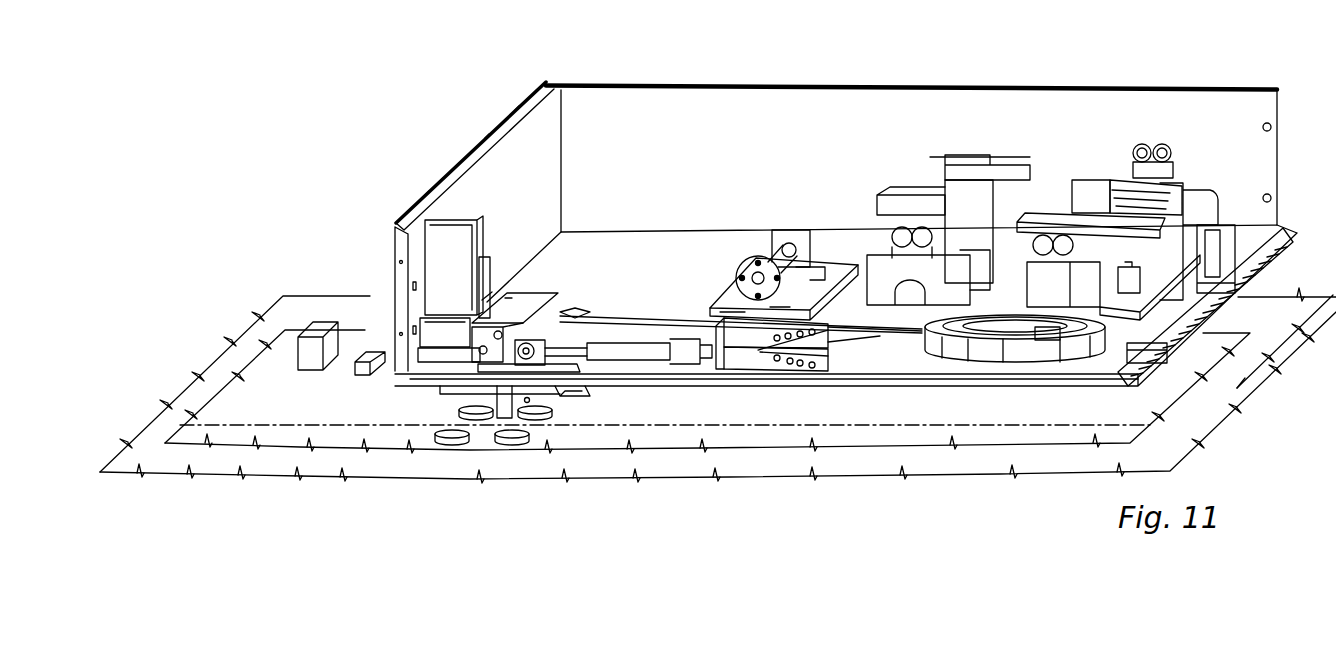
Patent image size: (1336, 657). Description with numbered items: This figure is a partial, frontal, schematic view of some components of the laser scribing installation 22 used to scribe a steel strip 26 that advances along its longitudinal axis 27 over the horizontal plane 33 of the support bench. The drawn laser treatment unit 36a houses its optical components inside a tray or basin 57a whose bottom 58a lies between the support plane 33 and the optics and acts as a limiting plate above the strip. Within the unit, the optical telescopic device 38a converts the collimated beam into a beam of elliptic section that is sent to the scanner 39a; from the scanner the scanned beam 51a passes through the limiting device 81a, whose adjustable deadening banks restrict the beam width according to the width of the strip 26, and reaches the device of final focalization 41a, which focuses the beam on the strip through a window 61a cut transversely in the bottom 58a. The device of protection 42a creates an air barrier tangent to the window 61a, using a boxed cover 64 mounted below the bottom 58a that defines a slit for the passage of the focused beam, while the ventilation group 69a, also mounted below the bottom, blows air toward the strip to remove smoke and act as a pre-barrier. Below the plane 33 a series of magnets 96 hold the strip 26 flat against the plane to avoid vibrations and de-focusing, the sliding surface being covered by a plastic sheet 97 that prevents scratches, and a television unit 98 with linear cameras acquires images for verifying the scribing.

The laser scribing installation 22 is at (1100, 63).
The strip 26 is at (283, 345).
The longitudinal axis 27 is at (306, 425).
The horizontal plane 33 is at (1262, 385).
The laser treatment unit 36a is at (470, 107).
The optical telescopic device 38a is at (961, 121).
The scanner 39a is at (936, 355).
The device of final focalization 41a is at (584, 278).
The device of protection 42a is at (462, 397).
The scanned beam 51a is at (858, 330).
The tray or basin 57a is at (448, 158).
The bottom 58a is at (686, 286).
The window 61a is at (544, 290).
The boxed cover 64 is at (465, 380).
The ventilation group 69a is at (563, 384).
The limiting device 81a is at (726, 264).
The magnets 96 is at (545, 431).
The sheet 97 is at (1208, 397).
The television unit 98 is at (311, 317).